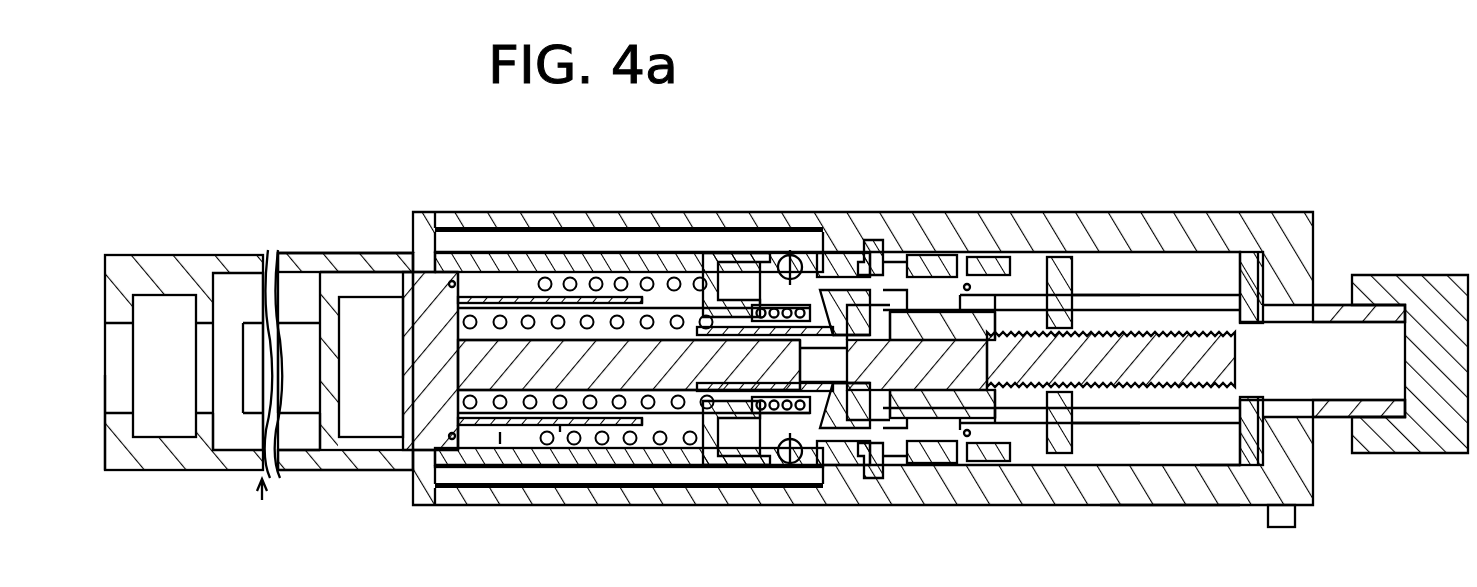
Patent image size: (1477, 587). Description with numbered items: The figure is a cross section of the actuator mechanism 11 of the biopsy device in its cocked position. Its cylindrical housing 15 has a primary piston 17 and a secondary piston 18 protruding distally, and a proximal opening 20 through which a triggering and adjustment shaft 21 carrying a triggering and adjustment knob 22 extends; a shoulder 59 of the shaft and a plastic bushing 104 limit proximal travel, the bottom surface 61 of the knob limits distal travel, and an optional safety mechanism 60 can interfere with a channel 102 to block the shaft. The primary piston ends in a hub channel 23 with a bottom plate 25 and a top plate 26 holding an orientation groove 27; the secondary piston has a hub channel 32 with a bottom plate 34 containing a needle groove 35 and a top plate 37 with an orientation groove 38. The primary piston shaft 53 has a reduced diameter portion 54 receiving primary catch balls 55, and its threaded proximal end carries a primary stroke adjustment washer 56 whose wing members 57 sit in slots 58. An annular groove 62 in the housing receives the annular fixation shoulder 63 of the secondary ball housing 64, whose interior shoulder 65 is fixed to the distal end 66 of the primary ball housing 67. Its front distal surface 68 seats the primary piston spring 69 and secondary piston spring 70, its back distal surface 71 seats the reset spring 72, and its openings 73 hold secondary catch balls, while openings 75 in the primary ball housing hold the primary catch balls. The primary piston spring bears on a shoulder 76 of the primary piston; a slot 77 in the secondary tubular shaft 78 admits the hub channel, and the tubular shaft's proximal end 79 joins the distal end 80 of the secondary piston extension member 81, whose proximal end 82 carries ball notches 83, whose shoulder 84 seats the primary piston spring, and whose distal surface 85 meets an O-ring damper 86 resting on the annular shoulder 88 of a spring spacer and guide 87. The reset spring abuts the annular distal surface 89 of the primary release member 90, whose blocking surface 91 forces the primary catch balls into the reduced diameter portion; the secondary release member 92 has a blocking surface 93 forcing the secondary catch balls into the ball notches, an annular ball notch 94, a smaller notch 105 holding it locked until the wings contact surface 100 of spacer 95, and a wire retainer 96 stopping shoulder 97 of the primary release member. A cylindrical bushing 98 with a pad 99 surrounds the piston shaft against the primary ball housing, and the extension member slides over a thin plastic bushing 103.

The actuator mechanism 11 is at (1181, 525).
The housing 15 is at (1158, 228).
The primary piston 17 is at (433, 420).
The secondary piston 18 is at (255, 521).
The opening 20 is at (1290, 415).
The triggering and adjustment shaft 21 is at (1243, 302).
The triggering and adjustment knob 22 is at (1428, 300).
The hub channel 23 is at (345, 255).
The bottom plate 25 is at (372, 300).
The top plate 26 is at (340, 440).
The orientation groove 27 is at (300, 405).
The hub channel 32 is at (168, 315).
The bottom plate 34 is at (222, 315).
The needle groove 35 is at (220, 450).
The top plate 37 is at (105, 300).
The orientation groove 38 is at (105, 380).
The piston shaft 53 is at (560, 405).
The reduced diameter portion 54 is at (855, 355).
The primary catch balls 55 is at (800, 360).
The primary stroke adjustment washer 56 is at (1075, 295).
The wing members 57 is at (1100, 425).
The slots 58 is at (1120, 300).
The shoulder 59 is at (1240, 465).
The safety mechanism 60 is at (1283, 516).
The bottom surface 61 is at (1330, 310).
The annular groove 62 is at (866, 250).
The annular fixation shoulder 63 is at (870, 462).
The secondary ball housing 64 is at (715, 475).
The interior shoulder 65 is at (705, 300).
The distal end 66 is at (680, 415).
The primary ball housing 67 is at (900, 292).
The front distal surface 68 is at (665, 285).
The primary piston spring 69 is at (522, 285).
The secondary piston spring 70 is at (560, 315).
The back distal surface 71 is at (760, 262).
The reset spring 72 is at (740, 262).
The openings 73 is at (843, 315).
The openings 75 is at (915, 418).
The shoulder 76 is at (403, 372).
The slot 77 is at (300, 325).
The secondary tubular shaft 78 is at (330, 262).
The proximal end 79 is at (485, 430).
The distal end 80 is at (465, 298).
The secondary piston extension member 81 is at (632, 455).
The proximal end 82 is at (748, 440).
The ball notches 83 is at (790, 255).
The shoulder 84 is at (520, 445).
The distal surface 85 is at (450, 440).
The O-ring damper 86 is at (440, 275).
The spring spacer and guide 87 is at (590, 430).
The annular shoulder 88 is at (445, 283).
The annular distal surface 89 is at (886, 260).
The primary release member 90 is at (930, 258).
The blocking surface 91 is at (840, 455).
The secondary release member 92 is at (985, 258).
The blocking surface 93 is at (800, 432).
The annular ball notch 94 is at (840, 298).
The spacer 95 is at (1000, 420).
The wire retainer 96 is at (968, 440).
The shoulder 97 is at (958, 432).
The cylindrical bushing 98 is at (960, 312).
The pad 99 is at (1062, 455).
The surface 100 is at (1035, 295).
The channel 102 is at (1290, 310).
The thin plastic bushing 103 is at (610, 230).
The plastic bushing 104 is at (1262, 270).
The smaller notch 105 is at (820, 256).